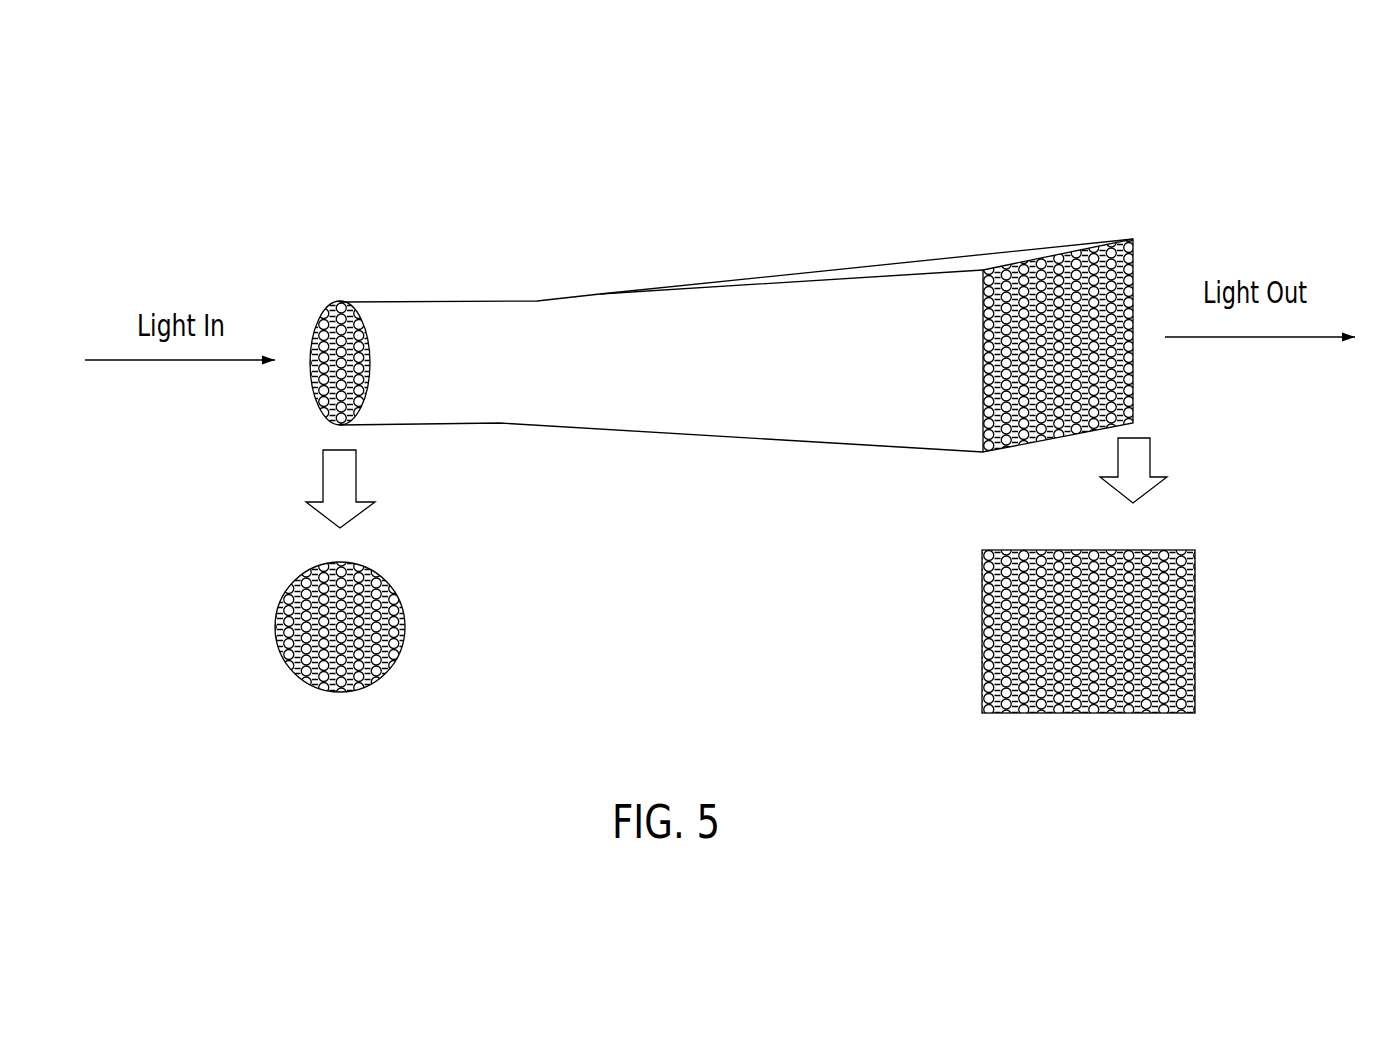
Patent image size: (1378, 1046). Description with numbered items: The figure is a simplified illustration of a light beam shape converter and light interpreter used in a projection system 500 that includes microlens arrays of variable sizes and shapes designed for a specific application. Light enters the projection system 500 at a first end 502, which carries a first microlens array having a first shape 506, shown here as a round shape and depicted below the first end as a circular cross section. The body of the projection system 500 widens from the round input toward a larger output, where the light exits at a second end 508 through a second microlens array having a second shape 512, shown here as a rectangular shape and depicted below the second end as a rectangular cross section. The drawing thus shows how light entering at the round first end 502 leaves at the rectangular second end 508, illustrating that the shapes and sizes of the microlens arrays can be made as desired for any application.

The projection system 500 is at (742, 299).
The first end 502 is at (285, 314).
The first shape 506 is at (333, 596).
The second end 508 is at (1134, 383).
The second shape 512 is at (1003, 610).